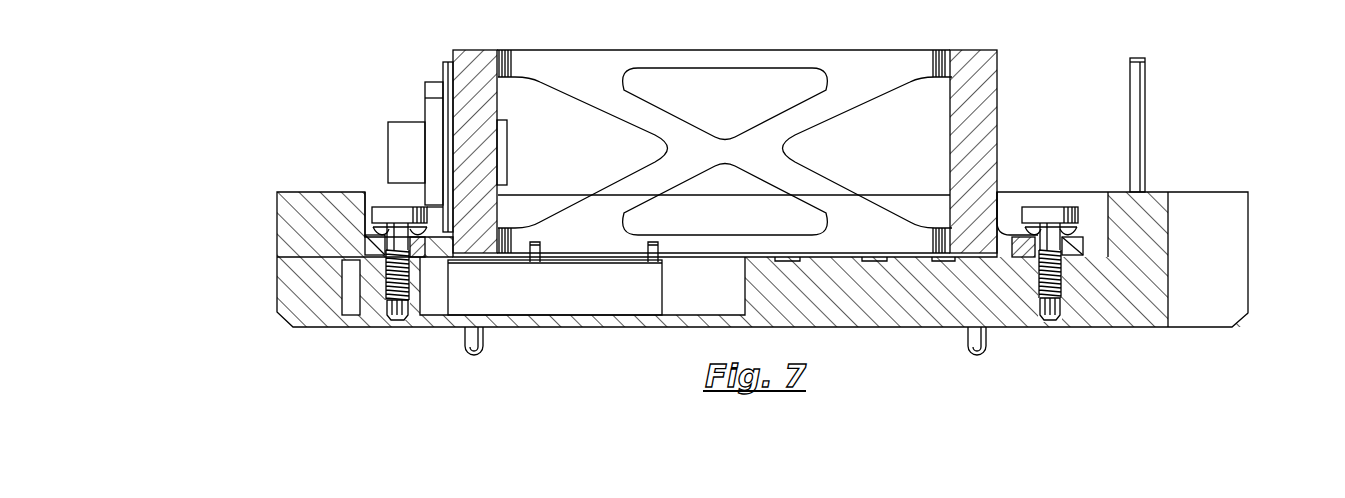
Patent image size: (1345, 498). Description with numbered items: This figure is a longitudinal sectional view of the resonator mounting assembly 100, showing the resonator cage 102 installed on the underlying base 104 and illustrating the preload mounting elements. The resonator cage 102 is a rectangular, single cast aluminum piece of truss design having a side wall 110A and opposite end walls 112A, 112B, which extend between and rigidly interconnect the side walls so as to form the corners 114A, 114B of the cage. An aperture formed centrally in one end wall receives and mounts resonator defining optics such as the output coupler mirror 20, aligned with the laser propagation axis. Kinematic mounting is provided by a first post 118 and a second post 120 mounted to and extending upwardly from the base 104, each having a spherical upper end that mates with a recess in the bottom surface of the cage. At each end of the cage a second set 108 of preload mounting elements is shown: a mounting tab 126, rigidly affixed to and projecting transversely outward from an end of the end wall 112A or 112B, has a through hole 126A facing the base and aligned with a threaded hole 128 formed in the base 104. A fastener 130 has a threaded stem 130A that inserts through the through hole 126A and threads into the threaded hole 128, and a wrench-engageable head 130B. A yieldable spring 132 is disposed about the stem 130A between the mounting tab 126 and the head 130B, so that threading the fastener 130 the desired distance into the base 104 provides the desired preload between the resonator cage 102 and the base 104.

The output coupler mirror 20 is at (412, 148).
The resonator mounting assembly 100 is at (363, 135).
The resonator cage 102 is at (740, 131).
The base 104 is at (744, 256).
The second set of preload mounting elements 108 is at (385, 198).
The side wall 110A is at (698, 57).
The end wall 112A is at (463, 58).
The end wall 112B is at (962, 50).
The corner 114A is at (986, 53).
The corner 114B is at (478, 50).
The first post 118 is at (478, 336).
The second post 120 is at (986, 340).
The mounting tab 126 is at (385, 240).
The through hole 126A is at (367, 243).
The threaded hole 128 is at (396, 278).
The fastener 130 is at (730, 235).
The threaded stem 130A is at (402, 290).
The wrench-engageable head 130B is at (378, 220).
The yieldable spring 132 is at (376, 231).